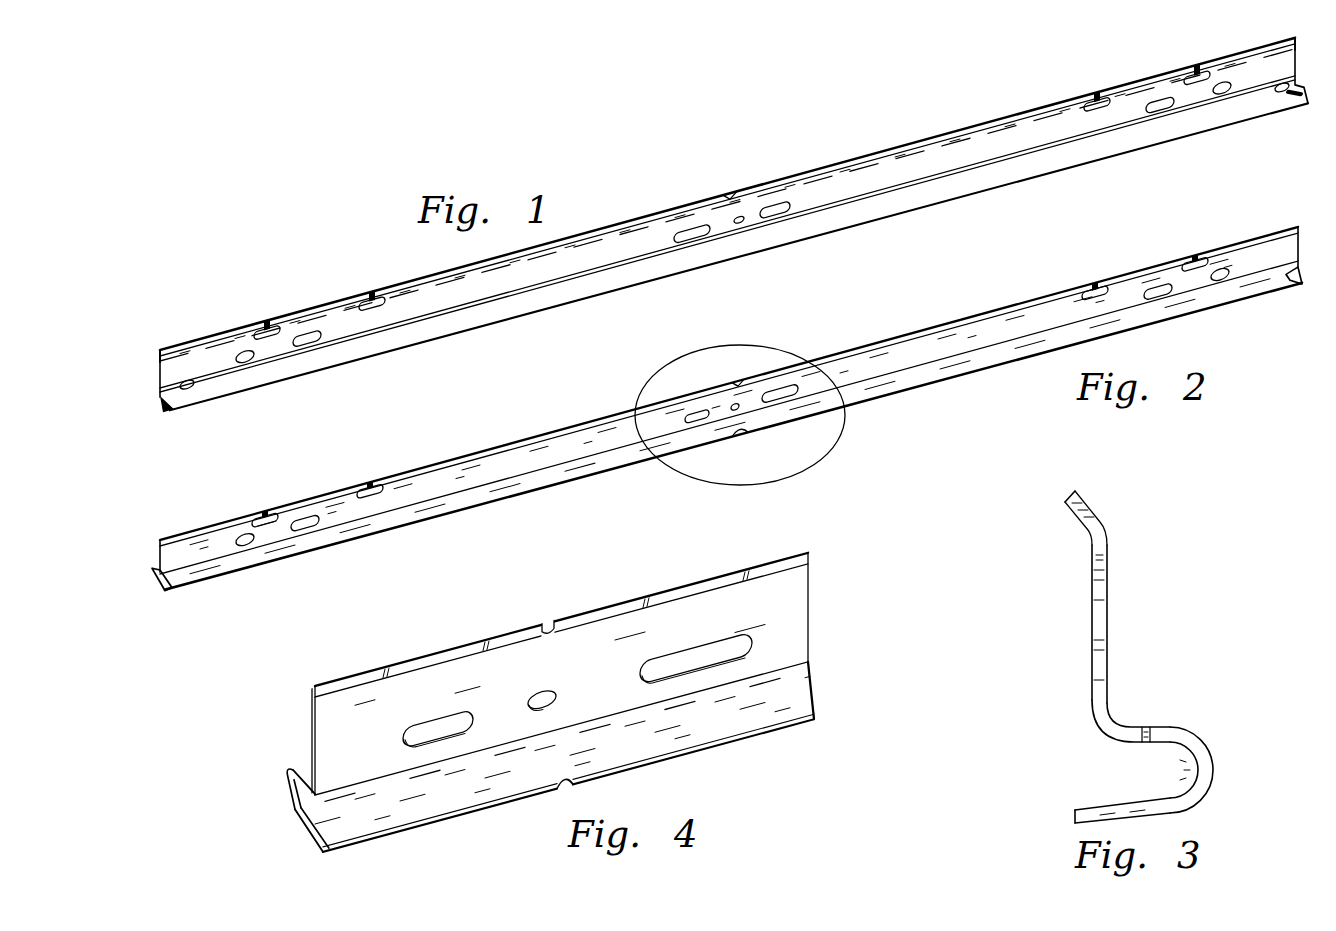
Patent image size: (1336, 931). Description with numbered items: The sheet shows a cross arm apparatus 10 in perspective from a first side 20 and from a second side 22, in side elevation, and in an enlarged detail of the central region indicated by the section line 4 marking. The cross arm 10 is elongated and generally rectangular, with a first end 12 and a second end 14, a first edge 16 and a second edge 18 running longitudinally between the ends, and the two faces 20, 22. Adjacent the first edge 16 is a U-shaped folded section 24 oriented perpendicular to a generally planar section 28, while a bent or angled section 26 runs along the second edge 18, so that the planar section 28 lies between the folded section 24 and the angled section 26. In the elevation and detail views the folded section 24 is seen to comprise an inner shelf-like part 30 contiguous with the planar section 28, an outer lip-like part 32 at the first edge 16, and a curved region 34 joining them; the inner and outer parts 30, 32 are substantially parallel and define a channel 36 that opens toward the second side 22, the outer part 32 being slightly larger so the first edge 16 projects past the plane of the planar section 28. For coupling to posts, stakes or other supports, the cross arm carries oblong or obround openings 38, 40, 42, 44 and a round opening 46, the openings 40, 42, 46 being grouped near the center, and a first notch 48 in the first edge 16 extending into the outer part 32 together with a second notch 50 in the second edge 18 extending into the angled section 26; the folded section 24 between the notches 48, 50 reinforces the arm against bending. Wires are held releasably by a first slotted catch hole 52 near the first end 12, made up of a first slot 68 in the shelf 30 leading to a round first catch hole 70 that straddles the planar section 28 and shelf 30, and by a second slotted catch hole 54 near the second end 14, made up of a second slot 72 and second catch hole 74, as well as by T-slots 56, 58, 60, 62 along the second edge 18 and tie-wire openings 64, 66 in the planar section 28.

In FIG. 2, the section line 4— 4 is at (640, 397).
In FIG. 1, the cross arm apparatus 10 is at (776, 138).
In FIG. 2, the cross arm apparatus 10 is at (862, 428).
In FIG. 3, the cross arm apparatus 10 is at (1152, 530).
In FIG. 1, the first end 12 is at (155, 402).
In FIG. 2, the first end 12 is at (1310, 212).
In FIG. 1, the second end 14 is at (1303, 72).
In FIG. 2, the second end 14 is at (152, 575).
In FIG. 2, the first edge 16 is at (906, 392).
In FIG. 4, the first edge 16 is at (735, 742).
In FIG. 3, the first edge 16 is at (1063, 813).
In FIG. 1, the second edge 18 is at (982, 118).
In FIG. 2, the second edge 18 is at (858, 350).
In FIG. 4, the second edge 18 is at (760, 567).
In FIG. 3, the second edge 18 is at (1066, 500).
In FIG. 1, the first side 20 is at (987, 158).
In FIG. 3, the first side 20 is at (1125, 642).
In FIG. 2, the second side 22 is at (974, 352).
In FIG. 4, the second side 22 is at (348, 758).
In FIG. 3, the second side 22 is at (1075, 680).
In FIG. 1, the folded section 24 is at (898, 208).
In FIG. 2, the folded section 24 is at (445, 507).
In FIG. 4, the folded section 24 is at (415, 800).
In FIG. 3, the folded section 24 is at (1197, 745).
In FIG. 1, the angled section 26 is at (585, 240).
In FIG. 2, the angled section 26 is at (510, 440).
In FIG. 4, the angled section 26 is at (806, 573).
In FIG. 3, the angled section 26 is at (1096, 505).
In FIG. 1, the planar section 28 is at (560, 275).
In FIG. 2, the planar section 28 is at (535, 465).
In FIG. 4, the planar section 28 is at (802, 644).
In FIG. 3, the planar section 28 is at (1110, 583).
In FIG. 4, the inner shelf-like part 30 is at (303, 758).
In FIG. 3, the inner shelf-like part 30 is at (1168, 728).
In FIG. 4, the outer flange or lip-like part 32 is at (305, 820).
In FIG. 3, the outer flange or lip-like part 32 is at (1125, 822).
In FIG. 4, the curved region 34 is at (285, 776).
In FIG. 3, the curved region 34 is at (1208, 782).
In FIG. 3, the channel 36 is at (1148, 767).
In FIG. 1, the oblong opening 38 is at (318, 342).
In FIG. 2, the oblong opening 38 is at (1160, 295).
In FIG. 1, the oblong opening 40 is at (788, 218).
In FIG. 2, the oblong opening 40 is at (695, 430).
In FIG. 4, the oblong opening 40 is at (440, 712).
In FIG. 1, the oblong opening 42 is at (693, 240).
In FIG. 2, the oblong opening 42 is at (786, 400).
In FIG. 4, the oblong opening 42 is at (690, 638).
In FIG. 1, the oblong opening 44 is at (1162, 112).
In FIG. 2, the oblong opening 44 is at (308, 532).
In FIG. 1, the round opening 46 is at (740, 225).
In FIG. 2, the round opening 46 is at (737, 403).
In FIG. 4, the round opening 46 is at (543, 710).
In FIG. 2, the first notch 48 is at (740, 442).
In FIG. 4, the first notch 48 is at (570, 782).
In FIG. 1, the second notch 50 is at (730, 193).
In FIG. 2, the second notch 50 is at (736, 384).
In FIG. 4, the second notch 50 is at (550, 625).
In FIG. 1, the first slotted catch hole 52 is at (190, 397).
In FIG. 2, the first slotted catch hole 52 is at (1283, 275).
In FIG. 3, the first slotted catch hole 52 is at (1146, 735).
In FIG. 1, the second slotted catch hole 54 is at (1280, 92).
In FIG. 2, the second slotted catch hole 54 is at (186, 584).
In FIG. 1, the T-slot 56 is at (267, 325).
In FIG. 2, the T-slot 56 is at (1198, 262).
In FIG. 1, the T-slot 58 is at (371, 300).
In FIG. 2, the T-slot 58 is at (1097, 291).
In FIG. 1, the T-slot 60 is at (1095, 98).
In FIG. 2, the T-slot 60 is at (372, 486).
In FIG. 1, the T-slot 62 is at (1187, 75).
In FIG. 2, the T-slot 62 is at (270, 518).
In FIG. 1, the opening 64 is at (248, 364).
In FIG. 2, the opening 64 is at (1220, 282).
In FIG. 1, the opening 66 is at (1222, 96).
In FIG. 2, the opening 66 is at (248, 548).
In FIG. 1, the first slot 68 is at (163, 355).
In FIG. 1, the first catch hole 70 is at (185, 383).
In FIG. 1, the second slot 72 is at (1287, 93).
In FIG. 1, the second catch hole 74 is at (1268, 46).